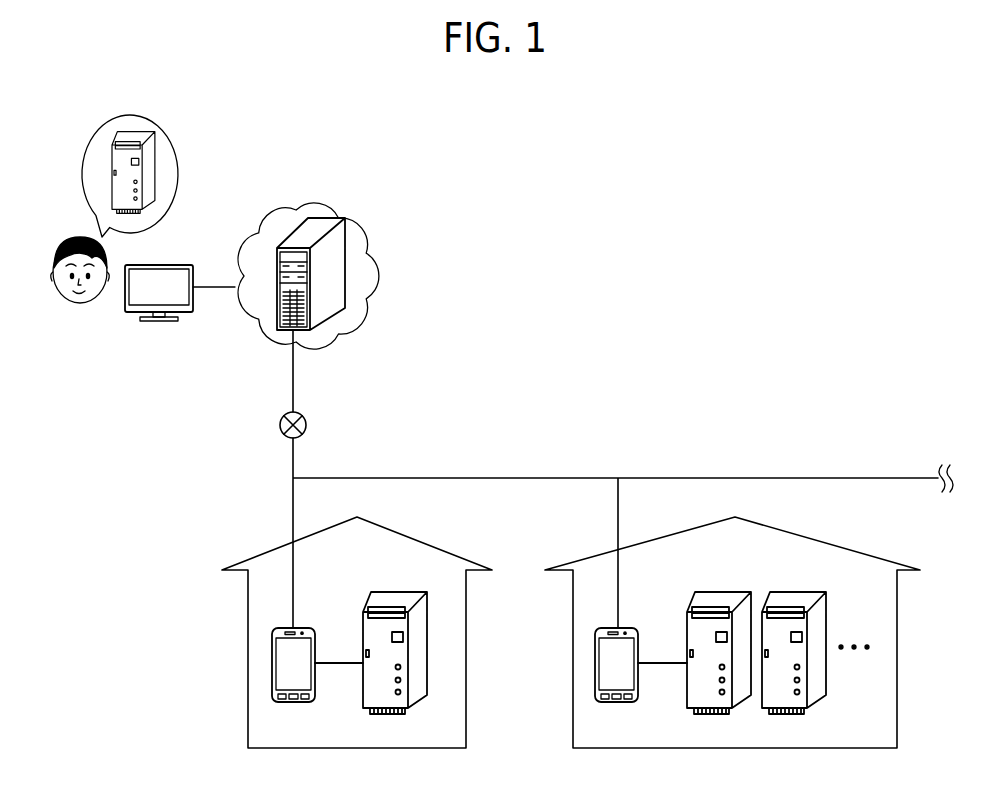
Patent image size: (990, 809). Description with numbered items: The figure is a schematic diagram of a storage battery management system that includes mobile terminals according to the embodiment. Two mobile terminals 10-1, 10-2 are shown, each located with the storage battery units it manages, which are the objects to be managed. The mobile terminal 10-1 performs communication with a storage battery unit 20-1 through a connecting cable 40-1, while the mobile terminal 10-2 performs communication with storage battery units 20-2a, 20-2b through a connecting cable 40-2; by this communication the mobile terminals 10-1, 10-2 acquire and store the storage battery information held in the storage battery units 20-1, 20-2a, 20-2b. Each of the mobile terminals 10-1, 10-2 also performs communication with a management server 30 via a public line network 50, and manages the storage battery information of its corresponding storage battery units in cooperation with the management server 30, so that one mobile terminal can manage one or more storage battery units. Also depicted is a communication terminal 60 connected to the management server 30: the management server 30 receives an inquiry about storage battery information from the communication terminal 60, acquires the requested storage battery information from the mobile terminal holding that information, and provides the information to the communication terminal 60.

The mobile terminal 10-1 is at (308, 627).
The mobile terminal 10-2 is at (633, 627).
The storage battery unit 20-1 is at (398, 595).
The storage battery unit 20-2a is at (725, 595).
The storage battery unit 20-2b is at (798, 595).
The management server 30 is at (338, 212).
The connecting cable 40-1 is at (342, 668).
The connecting cable 40-2 is at (665, 668).
The public line network 50 is at (302, 413).
The communication terminal 60 is at (158, 263).